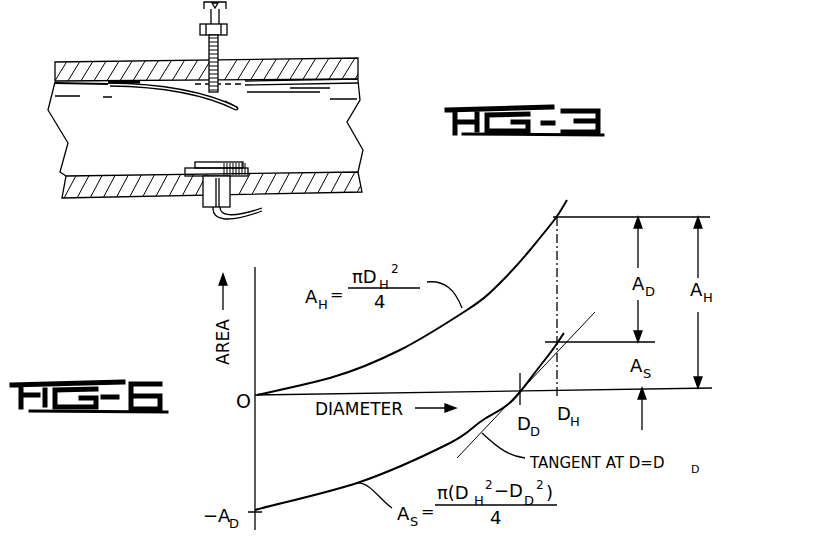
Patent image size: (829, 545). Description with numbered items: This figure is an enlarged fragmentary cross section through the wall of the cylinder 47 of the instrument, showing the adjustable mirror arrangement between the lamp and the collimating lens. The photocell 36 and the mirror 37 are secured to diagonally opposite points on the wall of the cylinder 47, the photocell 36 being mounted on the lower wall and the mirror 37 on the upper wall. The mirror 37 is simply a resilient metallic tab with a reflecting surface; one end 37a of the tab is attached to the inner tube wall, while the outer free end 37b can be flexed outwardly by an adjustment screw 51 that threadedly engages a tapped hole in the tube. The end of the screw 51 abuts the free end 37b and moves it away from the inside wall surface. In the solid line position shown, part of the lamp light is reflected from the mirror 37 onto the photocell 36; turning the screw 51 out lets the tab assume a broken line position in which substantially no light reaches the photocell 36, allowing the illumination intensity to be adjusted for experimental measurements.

The cylinder 47 is at (105, 62).
The adjustment screw 51 is at (222, 46).
The mirror 37 is at (198, 92).
The attached end of tab 37a is at (118, 88).
The free end of tab 37b is at (235, 104).
The photocell 36 is at (243, 164).